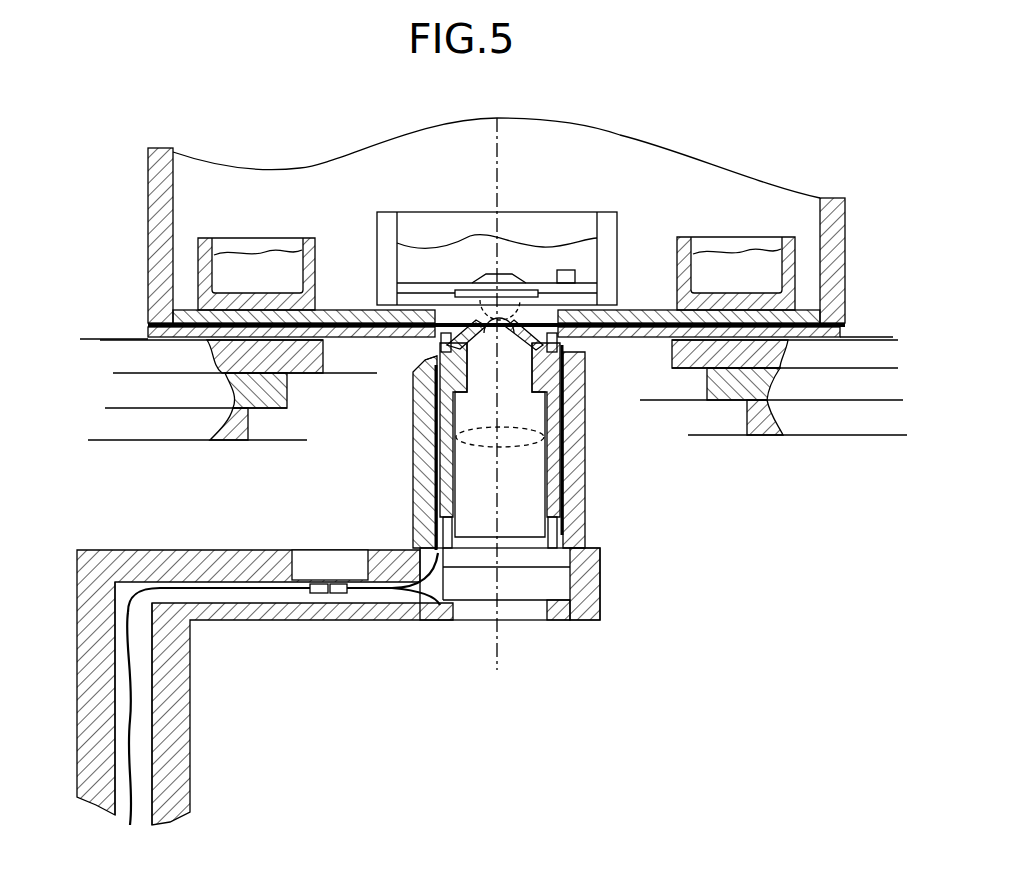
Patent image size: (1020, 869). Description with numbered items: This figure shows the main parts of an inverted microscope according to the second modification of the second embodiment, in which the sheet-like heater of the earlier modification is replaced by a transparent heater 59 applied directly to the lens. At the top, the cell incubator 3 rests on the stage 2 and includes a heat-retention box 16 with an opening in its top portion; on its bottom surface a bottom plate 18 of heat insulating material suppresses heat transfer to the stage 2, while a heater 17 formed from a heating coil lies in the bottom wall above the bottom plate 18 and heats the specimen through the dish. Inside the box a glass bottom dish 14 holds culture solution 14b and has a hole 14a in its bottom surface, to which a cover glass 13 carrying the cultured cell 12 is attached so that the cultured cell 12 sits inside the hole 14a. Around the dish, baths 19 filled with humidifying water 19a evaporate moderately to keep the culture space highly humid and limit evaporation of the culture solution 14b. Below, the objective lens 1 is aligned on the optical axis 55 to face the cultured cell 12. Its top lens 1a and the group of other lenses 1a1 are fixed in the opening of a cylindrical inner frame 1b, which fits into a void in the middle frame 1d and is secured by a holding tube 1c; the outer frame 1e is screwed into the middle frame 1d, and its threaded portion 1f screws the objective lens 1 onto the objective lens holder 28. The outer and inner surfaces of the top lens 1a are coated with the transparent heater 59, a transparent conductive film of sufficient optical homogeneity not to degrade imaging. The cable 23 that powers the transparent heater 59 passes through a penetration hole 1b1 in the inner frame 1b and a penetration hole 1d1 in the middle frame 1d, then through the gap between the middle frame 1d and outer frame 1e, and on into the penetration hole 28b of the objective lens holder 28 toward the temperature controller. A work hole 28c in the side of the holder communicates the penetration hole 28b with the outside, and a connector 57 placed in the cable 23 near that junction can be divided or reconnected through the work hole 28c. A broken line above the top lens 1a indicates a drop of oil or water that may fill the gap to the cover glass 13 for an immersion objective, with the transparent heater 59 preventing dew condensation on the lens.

The objective lens 1 is at (590, 526).
The top lens 1a is at (478, 312).
The group of other lenses 1a1 is at (580, 437).
The inner frame 1b is at (428, 395).
The penetration hole 1b1 is at (458, 338).
The holding tube 1c is at (430, 480).
The middle frame 1d is at (577, 405).
The penetration hole 1d1 is at (432, 368).
The outer frame 1e is at (583, 470).
The threaded portion 1f is at (593, 557).
The stage 2 is at (85, 340).
The cell incubator 3 is at (140, 187).
The cultured cell 12 is at (513, 283).
The cover glass 13 is at (467, 287).
The glass bottom dish 14 is at (618, 258).
The hole 14a is at (537, 273).
The culture solution 14b is at (423, 257).
The heat-retention box 16 is at (158, 242).
The heater 17 is at (150, 318).
The bottom plate 18 is at (150, 332).
The bath 19 is at (313, 272).
The humidifying water 19a is at (268, 265).
The cable 23 is at (125, 638).
The objective lens holder 28 is at (85, 690).
The penetration hole 28b is at (123, 738).
The work hole 28c is at (323, 560).
The optical axis 55 is at (493, 668).
The connector 57 is at (340, 596).
The transparent heater 59 is at (557, 342).